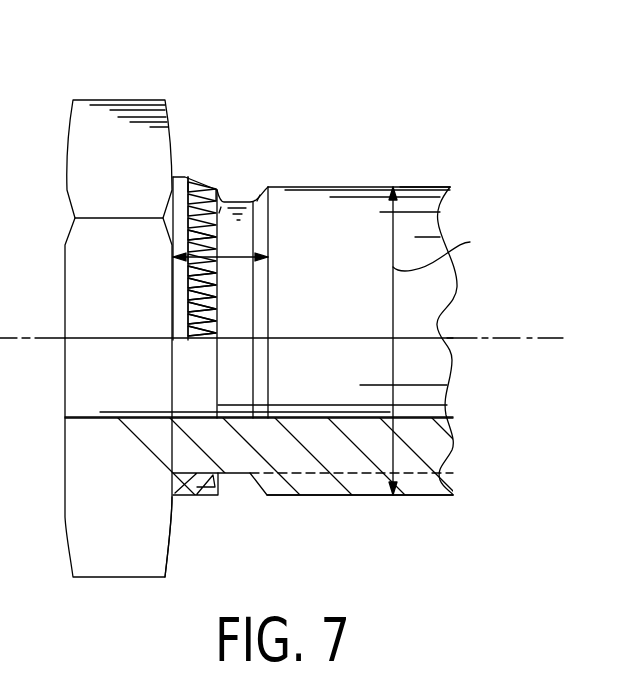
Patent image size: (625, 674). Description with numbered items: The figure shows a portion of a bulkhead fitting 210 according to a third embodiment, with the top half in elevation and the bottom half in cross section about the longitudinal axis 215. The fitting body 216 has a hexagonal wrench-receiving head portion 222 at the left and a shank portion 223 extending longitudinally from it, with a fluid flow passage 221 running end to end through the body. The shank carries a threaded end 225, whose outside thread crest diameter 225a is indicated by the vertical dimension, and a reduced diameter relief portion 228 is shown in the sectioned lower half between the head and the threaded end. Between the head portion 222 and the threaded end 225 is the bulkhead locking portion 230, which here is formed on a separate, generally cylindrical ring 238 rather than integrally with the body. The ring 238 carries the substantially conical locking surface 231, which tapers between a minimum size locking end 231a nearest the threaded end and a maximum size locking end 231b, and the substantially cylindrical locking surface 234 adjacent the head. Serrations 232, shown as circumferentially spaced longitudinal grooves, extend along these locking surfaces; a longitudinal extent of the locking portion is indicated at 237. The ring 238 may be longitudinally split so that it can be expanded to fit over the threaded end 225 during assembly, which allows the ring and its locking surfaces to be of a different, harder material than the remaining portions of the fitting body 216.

The bulkhead fitting 210 is at (526, 115).
The longitudinal axis 215 is at (551, 337).
The fitting body 216 is at (370, 458).
The fluid flow passage 221 is at (300, 417).
The head portion 222 is at (92, 110).
The shank portion 223 is at (423, 195).
The threaded end 225 is at (430, 487).
The thread crest diameter 225a is at (458, 341).
The reduced diameter relief portion 228 is at (247, 475).
The bulkhead locking portion 230 is at (187, 102).
The conical locking surface 231 is at (205, 185).
The minimum size locking end 231a is at (213, 187).
The maximum size locking end 231b is at (185, 177).
The serrations 232 is at (188, 328).
The cylindrical locking surface 234 is at (183, 498).
The thread length 237 is at (238, 257).
The ring 238 is at (200, 497).